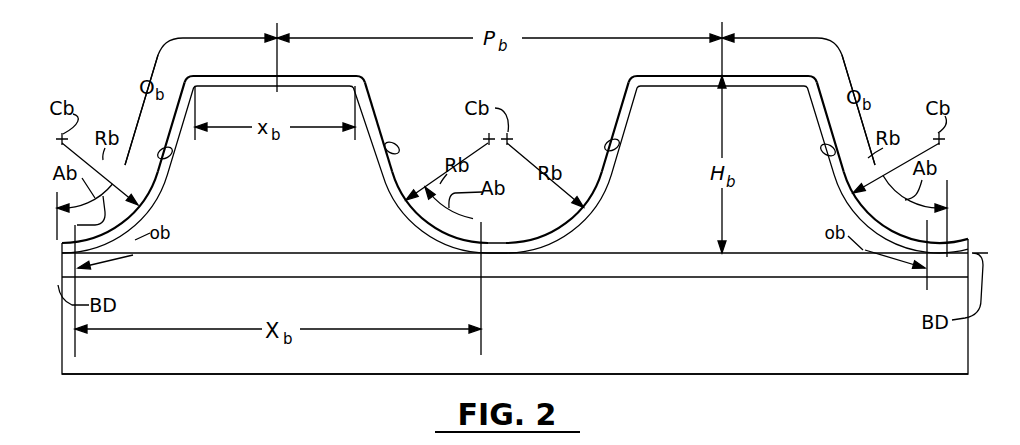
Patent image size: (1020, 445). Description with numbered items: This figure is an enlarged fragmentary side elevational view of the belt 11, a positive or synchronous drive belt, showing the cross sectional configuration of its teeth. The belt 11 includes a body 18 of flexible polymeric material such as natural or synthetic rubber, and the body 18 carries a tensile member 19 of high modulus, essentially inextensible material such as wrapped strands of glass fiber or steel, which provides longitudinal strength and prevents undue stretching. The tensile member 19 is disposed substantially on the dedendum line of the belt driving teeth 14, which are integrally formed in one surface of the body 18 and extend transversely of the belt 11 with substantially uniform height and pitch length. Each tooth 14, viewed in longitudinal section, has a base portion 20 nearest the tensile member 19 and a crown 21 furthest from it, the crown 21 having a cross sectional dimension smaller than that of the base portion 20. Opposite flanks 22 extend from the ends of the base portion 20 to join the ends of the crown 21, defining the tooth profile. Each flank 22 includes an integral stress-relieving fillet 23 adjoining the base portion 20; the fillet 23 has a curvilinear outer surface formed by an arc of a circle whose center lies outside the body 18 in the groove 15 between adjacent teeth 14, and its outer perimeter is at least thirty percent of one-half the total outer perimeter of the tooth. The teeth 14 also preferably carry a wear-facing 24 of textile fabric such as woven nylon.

The belt 11 is at (163, 365).
The belt driving teeth 14 is at (318, 103).
The groove 15 is at (123, 130).
The body 18 is at (857, 350).
The tensile member 19 is at (643, 265).
The base portion 20 is at (226, 238).
The crown 21 is at (253, 74).
The flanks 22 is at (172, 152).
The fillet 23 is at (135, 240).
The wear-facing 24 is at (374, 118).